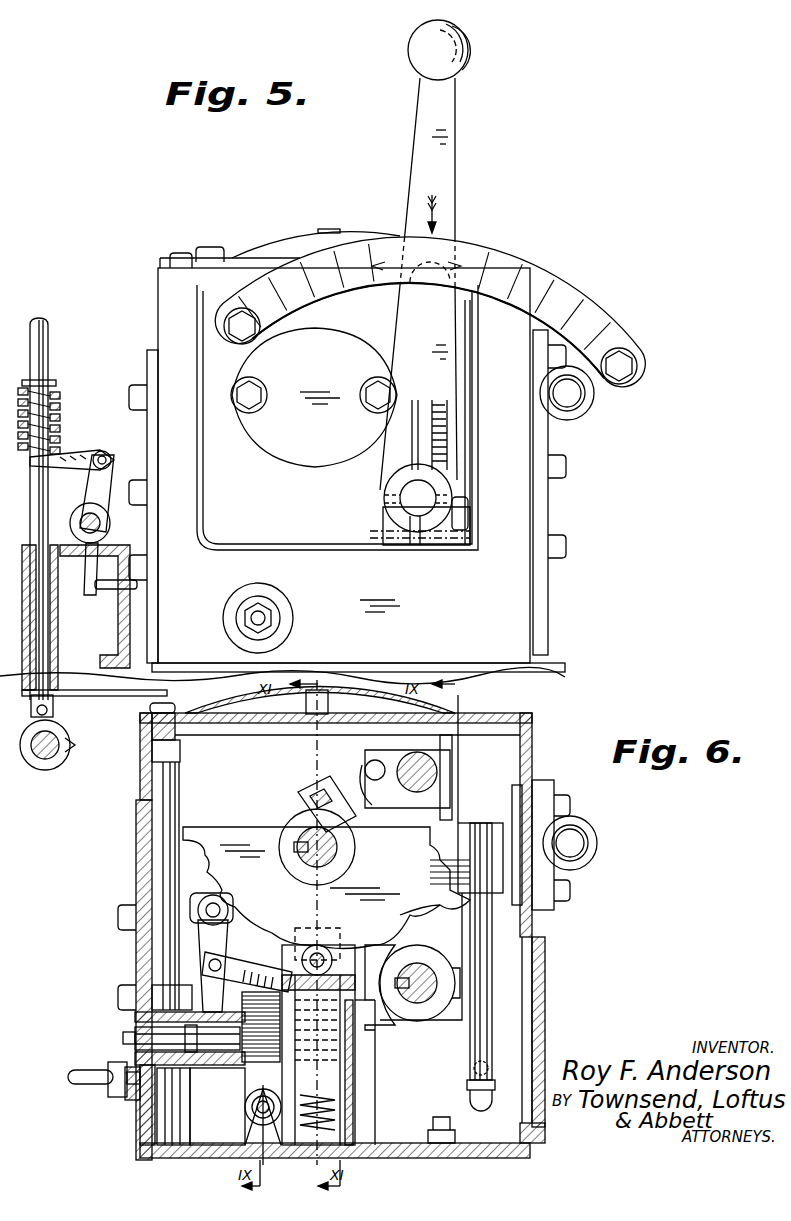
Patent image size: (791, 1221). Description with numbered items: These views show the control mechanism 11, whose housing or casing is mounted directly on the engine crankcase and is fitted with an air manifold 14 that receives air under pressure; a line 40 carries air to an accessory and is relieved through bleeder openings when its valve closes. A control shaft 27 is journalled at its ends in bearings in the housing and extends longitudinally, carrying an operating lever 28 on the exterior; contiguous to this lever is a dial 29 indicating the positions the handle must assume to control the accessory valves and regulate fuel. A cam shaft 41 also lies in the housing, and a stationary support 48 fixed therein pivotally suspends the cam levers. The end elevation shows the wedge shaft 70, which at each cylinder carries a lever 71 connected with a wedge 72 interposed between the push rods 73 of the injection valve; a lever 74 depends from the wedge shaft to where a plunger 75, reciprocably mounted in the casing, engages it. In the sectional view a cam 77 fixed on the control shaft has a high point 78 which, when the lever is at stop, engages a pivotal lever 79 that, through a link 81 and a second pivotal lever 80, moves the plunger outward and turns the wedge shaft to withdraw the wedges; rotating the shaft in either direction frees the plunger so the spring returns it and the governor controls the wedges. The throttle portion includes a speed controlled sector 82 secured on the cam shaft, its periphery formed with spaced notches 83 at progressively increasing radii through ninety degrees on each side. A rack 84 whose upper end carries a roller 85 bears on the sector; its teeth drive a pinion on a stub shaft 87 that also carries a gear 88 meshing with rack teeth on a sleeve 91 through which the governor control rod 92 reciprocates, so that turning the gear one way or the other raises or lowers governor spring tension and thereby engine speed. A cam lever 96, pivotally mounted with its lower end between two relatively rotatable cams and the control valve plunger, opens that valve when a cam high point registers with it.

In FIG. 5, the control mechanism 11 is at (283, 456).
In FIG. 6, the control mechanism 11 is at (140, 828).
In FIG. 5, the air manifold 14 is at (567, 393).
In FIG. 6, the air manifold 14 is at (598, 843).
In FIG. 5, the control shaft 27 is at (420, 493).
In FIG. 6, the control shaft 27 is at (420, 1003).
In FIG. 5, the operating lever 28 is at (445, 143).
In FIG. 5, the dial 29 is at (558, 290).
In FIG. 6, the line 40 is at (492, 1017).
In FIG. 6, the cam shaft 41 is at (300, 837).
In FIG. 6, the stationary support 48 is at (420, 770).
In FIG. 5, the wedge shaft 70 is at (110, 523).
In FIG. 5, the lever 71 is at (100, 490).
In FIG. 5, the wedge 72 is at (70, 457).
In FIG. 5, the push rods 73 is at (48, 358).
In FIG. 5, the lever 74 is at (88, 597).
In FIG. 5, the plunger 75 is at (108, 592).
In FIG. 6, the plunger 75 is at (85, 1084).
In FIG. 6, the cam 77 is at (440, 963).
In FIG. 6, the high point 78 is at (385, 1028).
In FIG. 6, the pivotal lever 79 is at (380, 947).
In FIG. 6, the pivotal lever 80 is at (205, 985).
In FIG. 6, the link 81 is at (270, 975).
In FIG. 6, the speed controlled sector 82 is at (326, 888).
In FIG. 6, the notches 83 is at (410, 912).
In FIG. 6, the rack 84 is at (335, 1118).
In FIG. 6, the roller 85 is at (338, 916).
In FIG. 6, the stub shaft 87 is at (238, 1062).
In FIG. 6, the gear 88 is at (300, 1072).
In FIG. 6, the sleeve 91 is at (250, 1124).
In FIG. 6, the governor control rod 92 is at (263, 1165).
In FIG. 6, the cam lever 96 is at (345, 803).